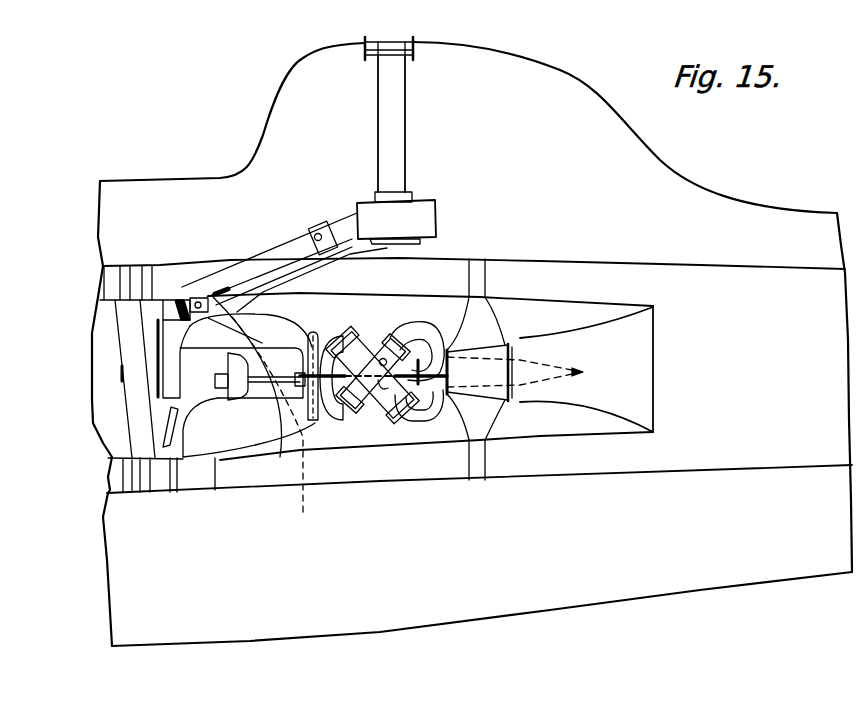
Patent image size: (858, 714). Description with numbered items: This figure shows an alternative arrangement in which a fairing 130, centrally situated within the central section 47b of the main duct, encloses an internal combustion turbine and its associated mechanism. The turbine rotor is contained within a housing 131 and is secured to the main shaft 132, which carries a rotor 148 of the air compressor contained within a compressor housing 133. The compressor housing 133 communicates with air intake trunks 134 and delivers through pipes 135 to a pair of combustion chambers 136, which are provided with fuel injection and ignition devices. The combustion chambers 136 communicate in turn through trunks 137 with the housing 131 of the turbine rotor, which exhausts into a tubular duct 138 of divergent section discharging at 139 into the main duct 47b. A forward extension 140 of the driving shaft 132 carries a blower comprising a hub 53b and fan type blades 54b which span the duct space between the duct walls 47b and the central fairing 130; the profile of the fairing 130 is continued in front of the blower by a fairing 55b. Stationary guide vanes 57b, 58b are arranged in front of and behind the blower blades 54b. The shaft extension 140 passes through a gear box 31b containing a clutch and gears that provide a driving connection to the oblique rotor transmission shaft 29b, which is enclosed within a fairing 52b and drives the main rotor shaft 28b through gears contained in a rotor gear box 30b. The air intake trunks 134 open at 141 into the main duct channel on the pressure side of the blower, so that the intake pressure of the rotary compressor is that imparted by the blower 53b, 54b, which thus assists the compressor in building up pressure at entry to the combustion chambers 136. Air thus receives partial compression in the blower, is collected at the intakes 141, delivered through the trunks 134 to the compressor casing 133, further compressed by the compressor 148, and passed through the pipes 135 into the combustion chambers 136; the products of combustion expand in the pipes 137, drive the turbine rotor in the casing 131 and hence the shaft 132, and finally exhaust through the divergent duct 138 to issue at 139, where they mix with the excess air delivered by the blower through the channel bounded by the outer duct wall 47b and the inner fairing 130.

The main rotor shaft 28b is at (407, 114).
The rotor gear box 30b is at (405, 215).
The central section of the main duct 47b is at (183, 263).
The oblique rotor transmission shaft 29b is at (282, 262).
The stationary guide vanes 57b is at (103, 266).
The stationary guide vanes 58b is at (152, 290).
The air intake openings 141 is at (182, 287).
The fairing 52b is at (297, 278).
The fairing 130 is at (377, 296).
The air intake trunks 134 is at (241, 330).
The compressor housing 133 is at (312, 333).
The pipes 135 is at (325, 350).
The combustion chambers 136 is at (366, 350).
The trunks 137 is at (422, 332).
The housing of the turbine rotor 131 is at (481, 350).
The tubular duct of divergent section 138 is at (570, 334).
The discharge outlet 139 is at (654, 347).
The gear box 31b is at (182, 368).
The hub 53b is at (143, 380).
The fairing 55b is at (125, 396).
The forward extension of the driving shaft 140 is at (253, 440).
The main shaft 132 is at (362, 412).
The fan type blades 54b is at (142, 493).
The rotor of the air compressor 148 is at (274, 429).